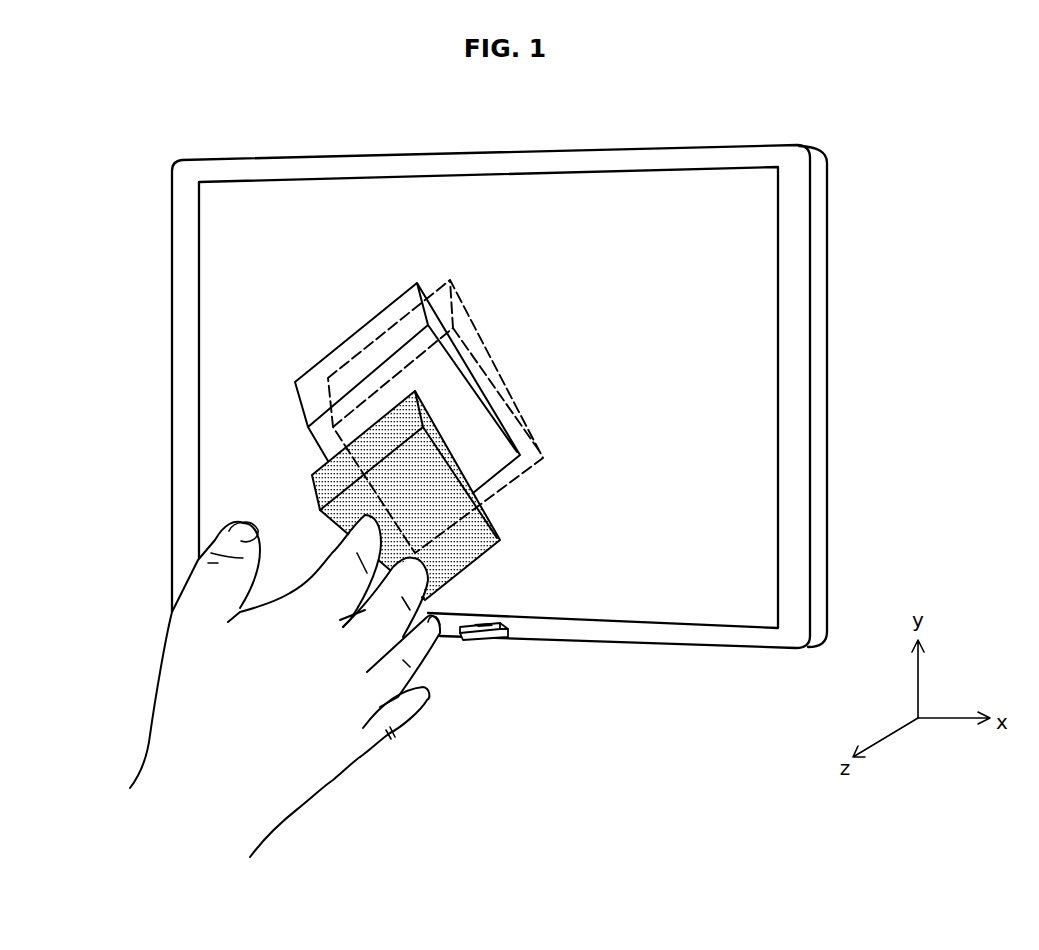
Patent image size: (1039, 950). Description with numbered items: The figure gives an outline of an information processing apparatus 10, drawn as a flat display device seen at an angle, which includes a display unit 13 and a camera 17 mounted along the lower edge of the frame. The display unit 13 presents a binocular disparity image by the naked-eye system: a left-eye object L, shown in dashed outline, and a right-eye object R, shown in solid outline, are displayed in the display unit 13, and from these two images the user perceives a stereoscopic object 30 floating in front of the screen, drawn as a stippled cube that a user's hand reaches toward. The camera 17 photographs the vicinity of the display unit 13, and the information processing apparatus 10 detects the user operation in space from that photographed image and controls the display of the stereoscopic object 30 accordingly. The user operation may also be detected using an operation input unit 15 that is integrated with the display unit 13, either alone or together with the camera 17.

The information processing apparatus 10 is at (706, 145).
The display unit 13 is at (418, 397).
The operation input unit 15 is at (199, 316).
The camera 17 is at (480, 645).
The stereoscopic object 30 is at (313, 492).
The right-eye object R is at (350, 340).
The left-eye object L is at (490, 335).